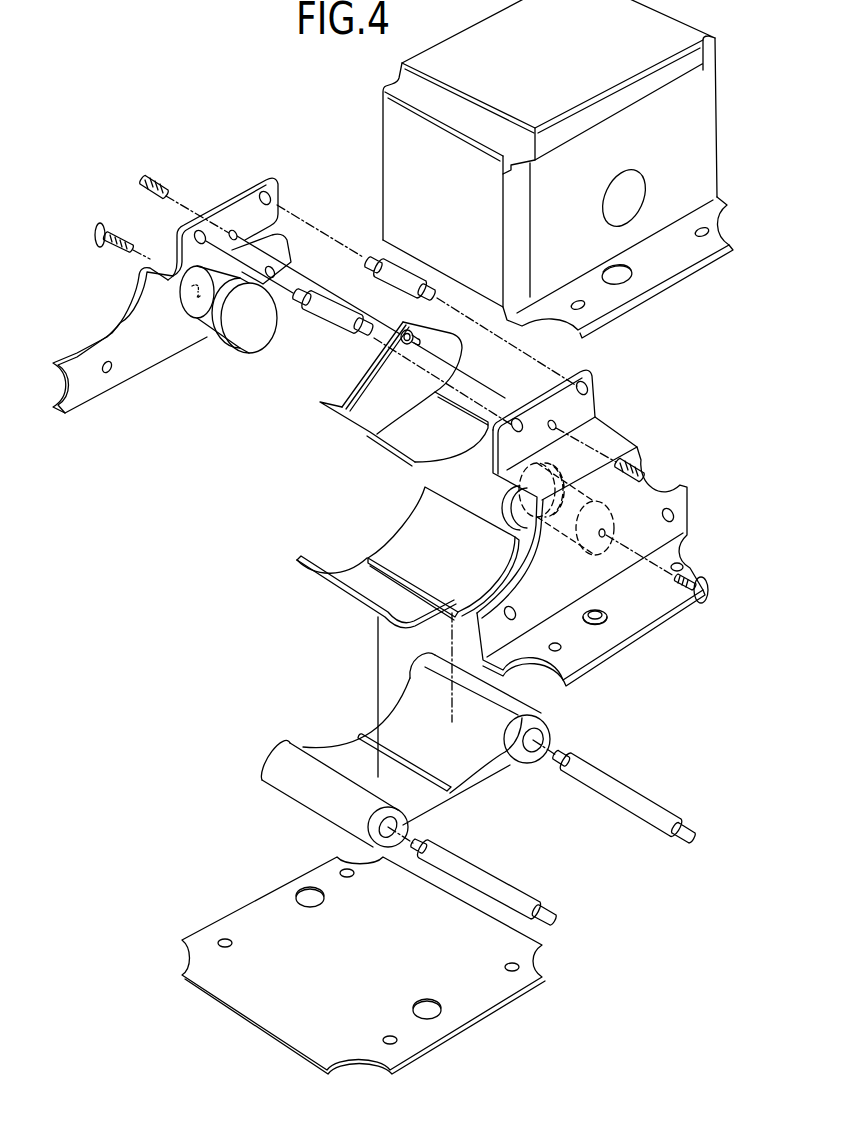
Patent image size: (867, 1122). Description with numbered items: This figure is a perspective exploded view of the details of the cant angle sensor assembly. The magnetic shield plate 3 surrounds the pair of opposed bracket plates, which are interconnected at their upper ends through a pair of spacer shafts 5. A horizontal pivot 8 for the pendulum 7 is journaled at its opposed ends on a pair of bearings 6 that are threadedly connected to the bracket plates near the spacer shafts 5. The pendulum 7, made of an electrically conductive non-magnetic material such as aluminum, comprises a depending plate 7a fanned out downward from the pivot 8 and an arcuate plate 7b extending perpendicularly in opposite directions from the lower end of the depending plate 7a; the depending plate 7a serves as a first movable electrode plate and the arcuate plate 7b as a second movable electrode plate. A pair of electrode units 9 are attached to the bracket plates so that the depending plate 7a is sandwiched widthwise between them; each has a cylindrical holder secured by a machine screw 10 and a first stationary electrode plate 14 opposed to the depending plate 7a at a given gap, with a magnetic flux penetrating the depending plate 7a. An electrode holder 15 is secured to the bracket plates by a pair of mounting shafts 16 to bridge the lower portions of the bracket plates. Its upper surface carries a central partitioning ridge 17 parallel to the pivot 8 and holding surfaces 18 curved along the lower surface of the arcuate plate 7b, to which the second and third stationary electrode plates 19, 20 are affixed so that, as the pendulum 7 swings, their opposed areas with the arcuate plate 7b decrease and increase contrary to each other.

The magnetic shield plate 3 is at (711, 122).
The spacer shafts 5 is at (318, 313).
The bearings 6 is at (158, 178).
The pendulum 7 is at (401, 407).
The depending plate 7a is at (373, 362).
The arcuate plate 7b is at (402, 448).
The horizontal pivot 8 is at (407, 345).
The electrode units 9 is at (221, 356).
The machine screw 10 is at (95, 230).
The first stationary electrode plate 14 is at (243, 345).
The electrode holder 15 is at (402, 750).
The mounting shafts 16 is at (625, 787).
The partitioning ridge 17 is at (412, 767).
The holding surfaces 18 is at (332, 757).
The second stationary electrode plate 19 is at (337, 595).
The third stationary electrode plate 20 is at (400, 533).